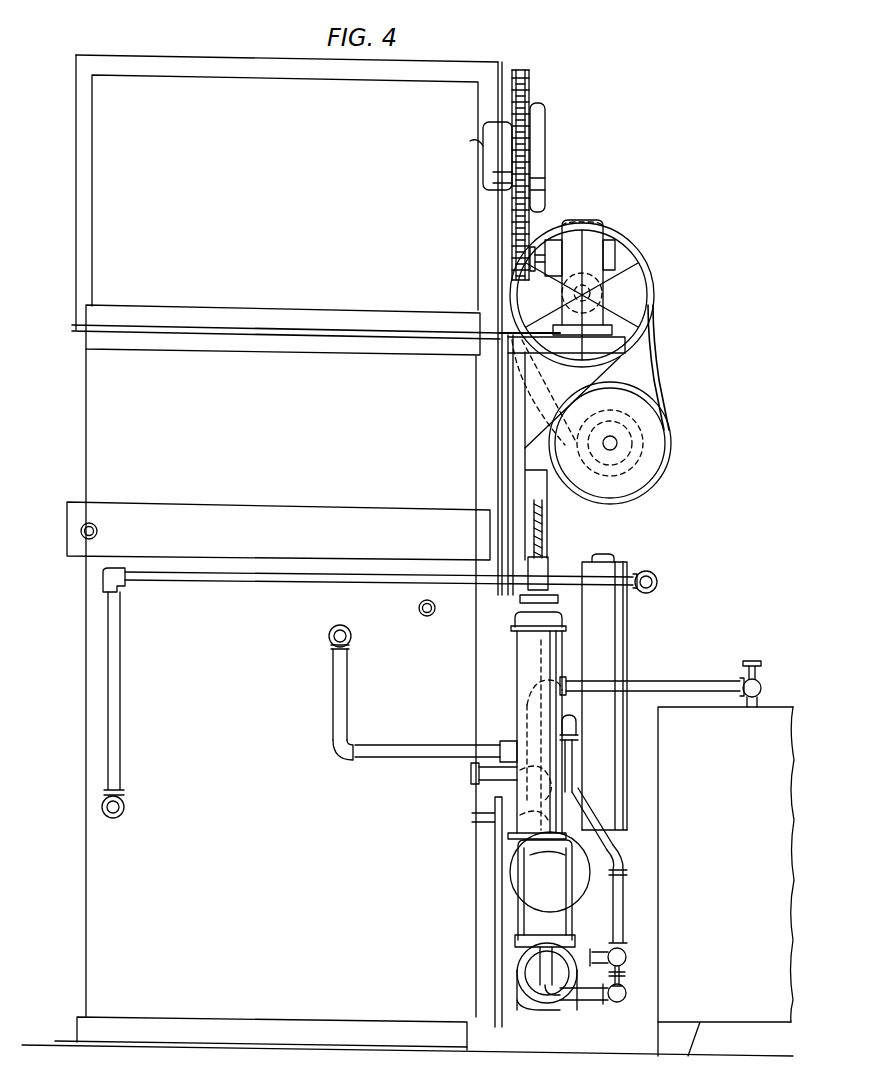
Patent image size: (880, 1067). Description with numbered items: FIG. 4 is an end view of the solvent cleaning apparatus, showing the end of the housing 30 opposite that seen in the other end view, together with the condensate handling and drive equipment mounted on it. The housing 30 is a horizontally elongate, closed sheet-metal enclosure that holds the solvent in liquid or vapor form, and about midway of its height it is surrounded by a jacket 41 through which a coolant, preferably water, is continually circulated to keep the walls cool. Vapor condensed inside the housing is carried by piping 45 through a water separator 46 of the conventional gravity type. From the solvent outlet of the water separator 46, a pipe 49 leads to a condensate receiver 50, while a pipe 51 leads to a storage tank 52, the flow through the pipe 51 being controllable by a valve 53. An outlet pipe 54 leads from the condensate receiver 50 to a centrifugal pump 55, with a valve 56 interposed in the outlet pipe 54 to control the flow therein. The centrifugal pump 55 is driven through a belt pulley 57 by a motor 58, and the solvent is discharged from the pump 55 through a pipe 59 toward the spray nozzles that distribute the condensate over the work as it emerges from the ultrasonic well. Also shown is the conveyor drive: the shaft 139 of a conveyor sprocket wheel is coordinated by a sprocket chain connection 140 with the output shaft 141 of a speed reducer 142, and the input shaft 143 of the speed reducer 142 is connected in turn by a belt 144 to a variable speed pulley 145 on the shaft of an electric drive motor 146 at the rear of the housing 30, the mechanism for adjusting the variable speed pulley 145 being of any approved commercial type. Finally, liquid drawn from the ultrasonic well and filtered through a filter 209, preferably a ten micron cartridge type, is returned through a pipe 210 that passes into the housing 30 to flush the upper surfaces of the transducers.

The housing 30 is at (313, 52).
The jacket 41 is at (206, 508).
The piping 45 is at (338, 690).
The water separator 46 is at (522, 660).
The pipe 49 is at (543, 705).
The condensate receiver 50 is at (573, 724).
The pipe 51 is at (690, 694).
The storage tank 52 is at (726, 881).
The valve 53 is at (752, 670).
The outlet pipe 54 is at (598, 1000).
The centrifugal pump 55 is at (535, 1000).
The valve 56 is at (614, 976).
The belt pulley 57 is at (520, 960).
The motor 58 is at (590, 874).
The pipe 59 is at (612, 921).
The shaft 139 is at (483, 150).
The sprocket chain connection 140 is at (530, 96).
The output shaft 141 is at (540, 258).
The speed reducer 142 is at (597, 222).
The input shaft 143 is at (582, 277).
The belt 144 is at (652, 356).
The variable speed pulley 145 is at (600, 412).
The electric drive motor 146 is at (662, 422).
The filter 209 is at (607, 617).
The pipe 210 is at (292, 580).